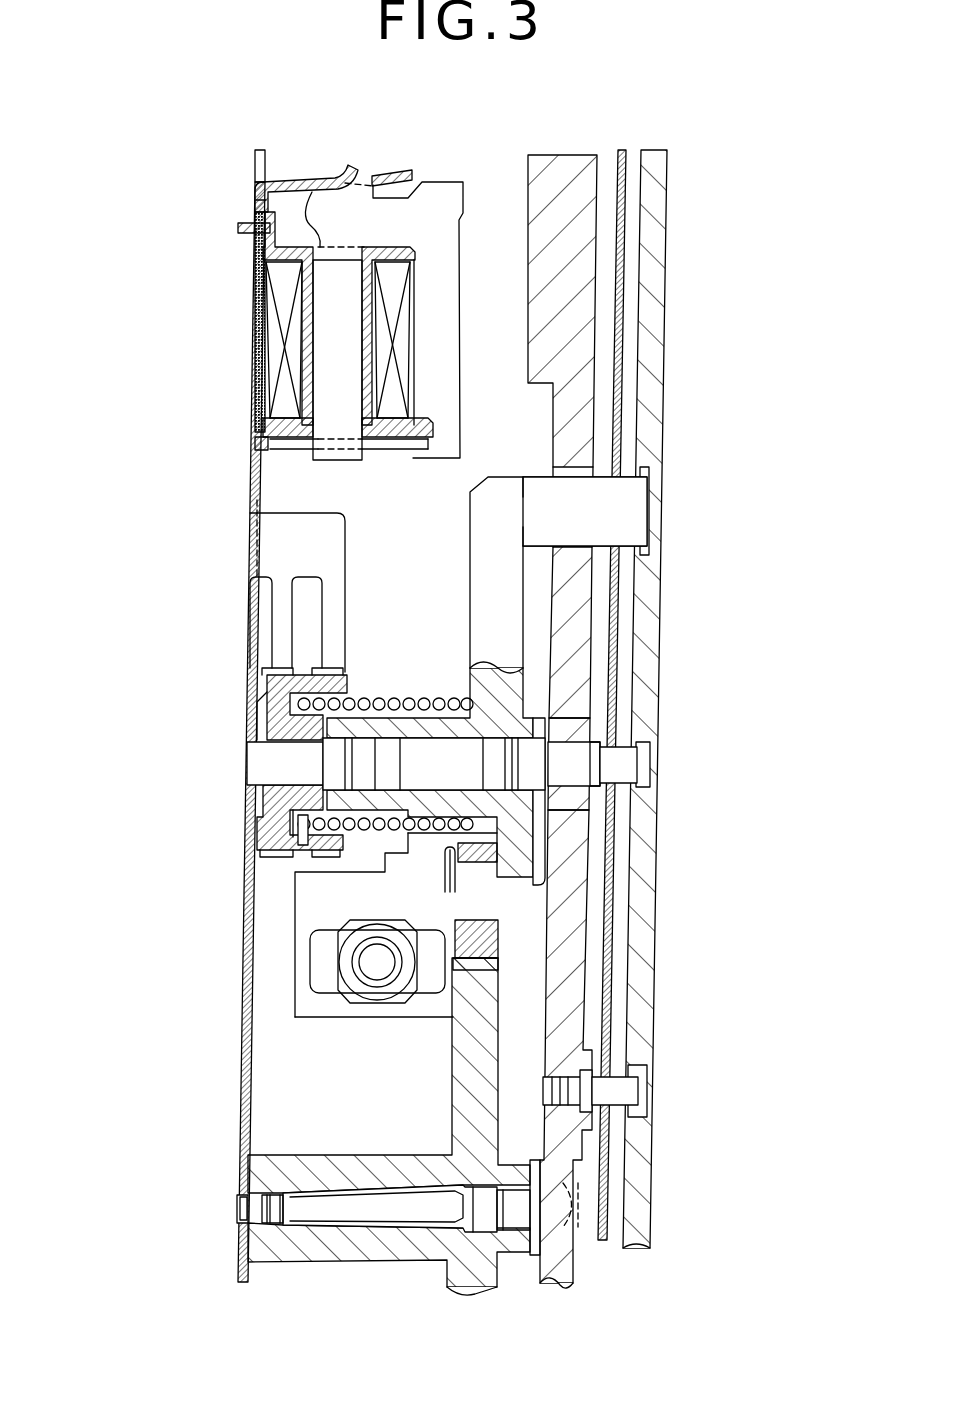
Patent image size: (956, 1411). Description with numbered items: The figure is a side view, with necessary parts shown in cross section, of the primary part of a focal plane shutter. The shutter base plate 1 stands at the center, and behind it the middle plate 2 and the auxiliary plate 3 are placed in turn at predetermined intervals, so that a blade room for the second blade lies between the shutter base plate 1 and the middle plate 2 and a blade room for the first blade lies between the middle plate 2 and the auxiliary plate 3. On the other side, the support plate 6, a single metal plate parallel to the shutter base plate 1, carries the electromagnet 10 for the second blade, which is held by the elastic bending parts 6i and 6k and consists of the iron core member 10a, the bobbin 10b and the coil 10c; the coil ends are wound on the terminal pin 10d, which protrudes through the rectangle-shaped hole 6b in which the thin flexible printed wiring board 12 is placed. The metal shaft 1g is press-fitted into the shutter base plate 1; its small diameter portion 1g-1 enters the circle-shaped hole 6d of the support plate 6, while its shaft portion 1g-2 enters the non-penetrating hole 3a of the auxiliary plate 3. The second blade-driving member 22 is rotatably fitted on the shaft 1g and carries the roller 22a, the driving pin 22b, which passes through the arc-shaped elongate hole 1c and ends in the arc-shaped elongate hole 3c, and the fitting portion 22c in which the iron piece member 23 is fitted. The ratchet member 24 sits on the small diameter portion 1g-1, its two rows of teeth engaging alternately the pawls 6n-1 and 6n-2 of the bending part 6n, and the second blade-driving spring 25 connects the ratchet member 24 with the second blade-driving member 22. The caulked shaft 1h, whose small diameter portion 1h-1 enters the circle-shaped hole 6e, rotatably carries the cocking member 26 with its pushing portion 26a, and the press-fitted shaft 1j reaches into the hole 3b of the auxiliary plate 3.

The shutter base plate 1 is at (616, 700).
The arc-shaped elongate hole 1c is at (585, 556).
The shaft 1g is at (464, 763).
The small diameter portion 1g-1 is at (280, 764).
The shaft portion 1g-2 is at (620, 762).
The shaft 1h is at (395, 1230).
The small diameter portion 1h-1 is at (243, 1215).
The shaft 1j is at (625, 1092).
The middle plate 2 is at (621, 168).
The auxiliary plate 3 is at (686, 680).
The hole 3a is at (650, 775).
The hole 3b is at (640, 1078).
The arc-shaped elongate hole 3c is at (650, 470).
The support plate 6 is at (243, 1078).
The rectangle-shaped hole 6b is at (255, 208).
The circle-shaped hole 6d is at (262, 740).
The circle-shaped hole 6e is at (245, 1197).
The bending part 6i is at (310, 190).
The bending part 6k is at (290, 440).
The bending part 6n is at (235, 586).
The pawl 6n-1 is at (280, 592).
The pawl 6n-2 is at (330, 612).
The electromagnet for second blade 10 is at (395, 278).
The iron core member 10a is at (450, 300).
The bobbin 10b is at (372, 358).
The coil 10c is at (388, 390).
The terminal pin 10d is at (237, 230).
The printed wiring board 12 is at (256, 356).
The second blade-driving member 22 is at (531, 717).
The roller 22a is at (490, 905).
The driving pin 22b is at (598, 516).
The fitting portion 22c is at (312, 910).
The iron piece member 23 is at (330, 960).
The ratchet member 24 is at (262, 712).
The second blade-driving spring 25 is at (400, 696).
The cocking member 26 is at (505, 1109).
The pushing portion 26a is at (510, 966).